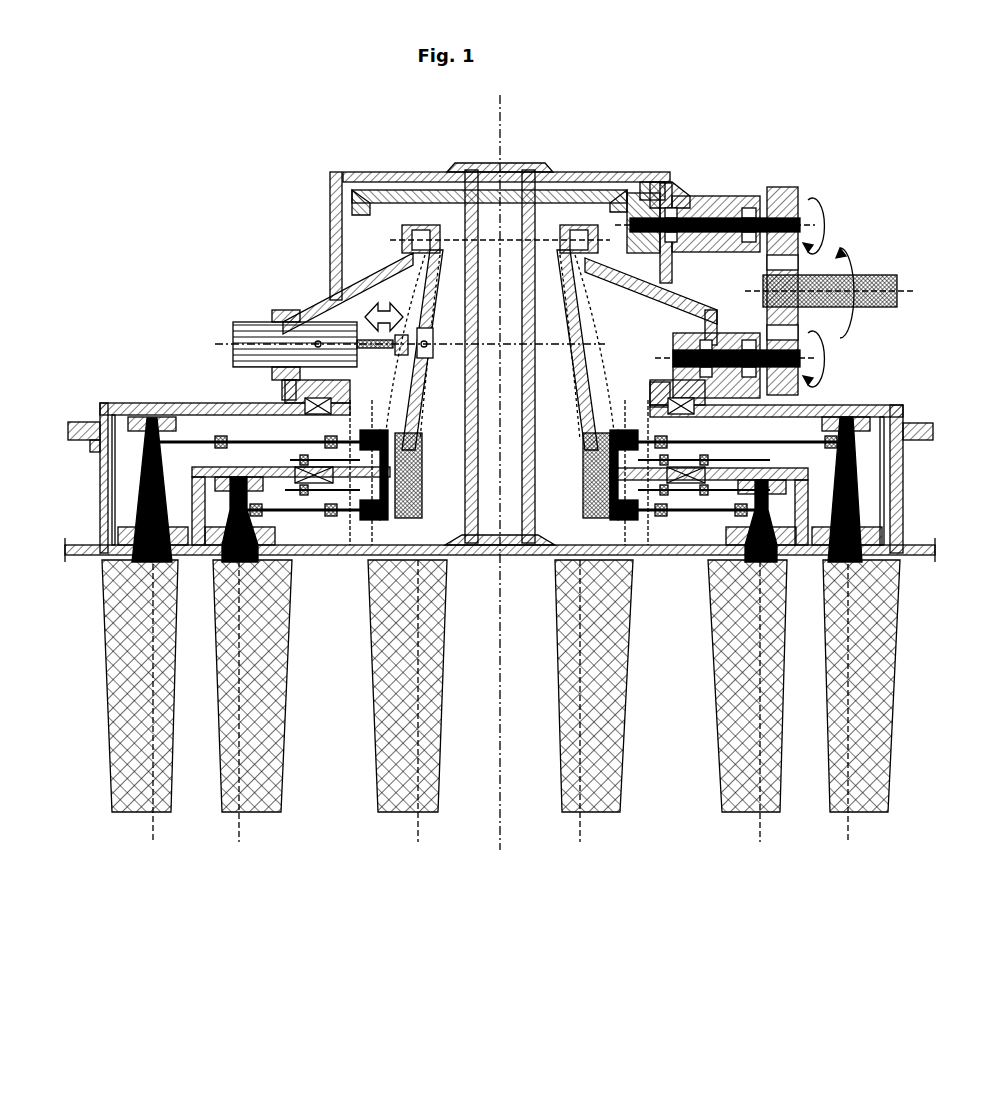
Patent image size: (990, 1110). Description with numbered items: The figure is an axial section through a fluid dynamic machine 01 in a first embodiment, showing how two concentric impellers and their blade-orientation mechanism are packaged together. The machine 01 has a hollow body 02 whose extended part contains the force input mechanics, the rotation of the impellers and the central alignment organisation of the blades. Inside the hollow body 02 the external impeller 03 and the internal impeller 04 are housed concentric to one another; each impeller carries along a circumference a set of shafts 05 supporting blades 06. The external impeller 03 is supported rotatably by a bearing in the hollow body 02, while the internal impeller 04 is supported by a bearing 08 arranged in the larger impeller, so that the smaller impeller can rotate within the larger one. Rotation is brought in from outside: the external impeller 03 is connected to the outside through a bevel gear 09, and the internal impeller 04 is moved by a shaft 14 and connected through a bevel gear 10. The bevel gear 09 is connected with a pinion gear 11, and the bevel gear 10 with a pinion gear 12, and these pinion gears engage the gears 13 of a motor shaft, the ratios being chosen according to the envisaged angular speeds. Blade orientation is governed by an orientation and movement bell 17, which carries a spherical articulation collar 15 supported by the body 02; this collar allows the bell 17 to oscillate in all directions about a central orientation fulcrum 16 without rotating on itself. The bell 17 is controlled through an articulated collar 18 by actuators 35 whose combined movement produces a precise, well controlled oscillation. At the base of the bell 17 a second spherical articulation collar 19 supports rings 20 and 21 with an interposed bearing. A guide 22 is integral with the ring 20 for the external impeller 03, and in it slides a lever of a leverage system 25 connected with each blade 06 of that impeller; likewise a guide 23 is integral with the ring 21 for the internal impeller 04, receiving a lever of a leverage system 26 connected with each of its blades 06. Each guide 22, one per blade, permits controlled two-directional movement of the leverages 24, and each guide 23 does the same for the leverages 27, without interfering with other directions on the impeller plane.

The fluid dynamic machine 01 is at (100, 492).
The hollow body 02 is at (332, 280).
The external impeller 03 is at (100, 462).
The internal impeller 04 is at (192, 497).
The shafts 05 is at (140, 563).
The blades 06 is at (463, 631).
The bearing 08 is at (465, 386).
The bevel gear 09 is at (733, 200).
The bevel gear 10 is at (650, 190).
The pinion gear 11 is at (802, 352).
The pinion gear 12 is at (802, 214).
The gears of a motor shaft 13 is at (877, 276).
The shaft 14 is at (563, 170).
The spherical articulation collar 15 is at (418, 232).
The central orientation fulcrum 16 is at (503, 237).
The orientation and movement bell 17 is at (441, 250).
The articulated collar 18 is at (340, 260).
The spherical articulation collar 19 is at (248, 322).
The ring 20 is at (600, 813).
The ring 21 is at (668, 724).
The guide 22 is at (640, 438).
The guide 23 is at (895, 712).
The leverages 24 is at (700, 444).
The leverage system 25 is at (690, 460).
The leverage system 26 is at (880, 568).
The leverages 27 is at (868, 622).
The actuators 35 is at (276, 313).